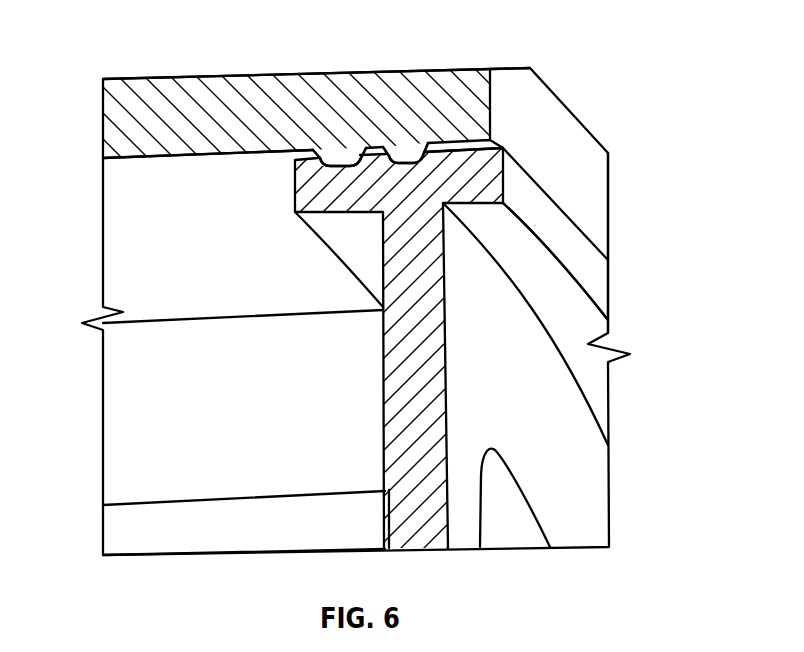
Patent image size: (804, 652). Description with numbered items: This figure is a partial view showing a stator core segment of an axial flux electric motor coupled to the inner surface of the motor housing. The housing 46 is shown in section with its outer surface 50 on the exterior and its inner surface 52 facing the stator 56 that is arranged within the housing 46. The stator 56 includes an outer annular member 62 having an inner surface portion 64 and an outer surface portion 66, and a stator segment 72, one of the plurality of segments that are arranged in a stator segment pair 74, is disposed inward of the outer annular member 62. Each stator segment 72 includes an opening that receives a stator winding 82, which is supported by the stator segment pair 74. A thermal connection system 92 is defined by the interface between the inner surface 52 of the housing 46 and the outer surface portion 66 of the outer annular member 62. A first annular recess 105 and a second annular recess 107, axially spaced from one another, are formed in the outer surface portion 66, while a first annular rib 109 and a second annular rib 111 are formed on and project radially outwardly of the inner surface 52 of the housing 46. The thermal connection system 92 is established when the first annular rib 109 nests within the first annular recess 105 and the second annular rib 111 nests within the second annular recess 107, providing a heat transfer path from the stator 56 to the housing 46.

The housing 46 is at (189, 107).
The outer surface 50 is at (251, 72).
The inner surface 52 is at (152, 173).
The stator 56 is at (633, 530).
The outer annular member 62 is at (517, 187).
The inner surface portion 64 is at (530, 243).
The outer surface portion 66 is at (466, 142).
The stator segment 72 is at (600, 279).
The stator segment pair 74 is at (555, 425).
The stator winding 82 is at (140, 528).
The thermal connection system 92 is at (264, 164).
The first annular recess 105 is at (308, 151).
The second annular recess 107 is at (405, 146).
The first annular rib 109 is at (338, 150).
The second annular rib 111 is at (395, 146).